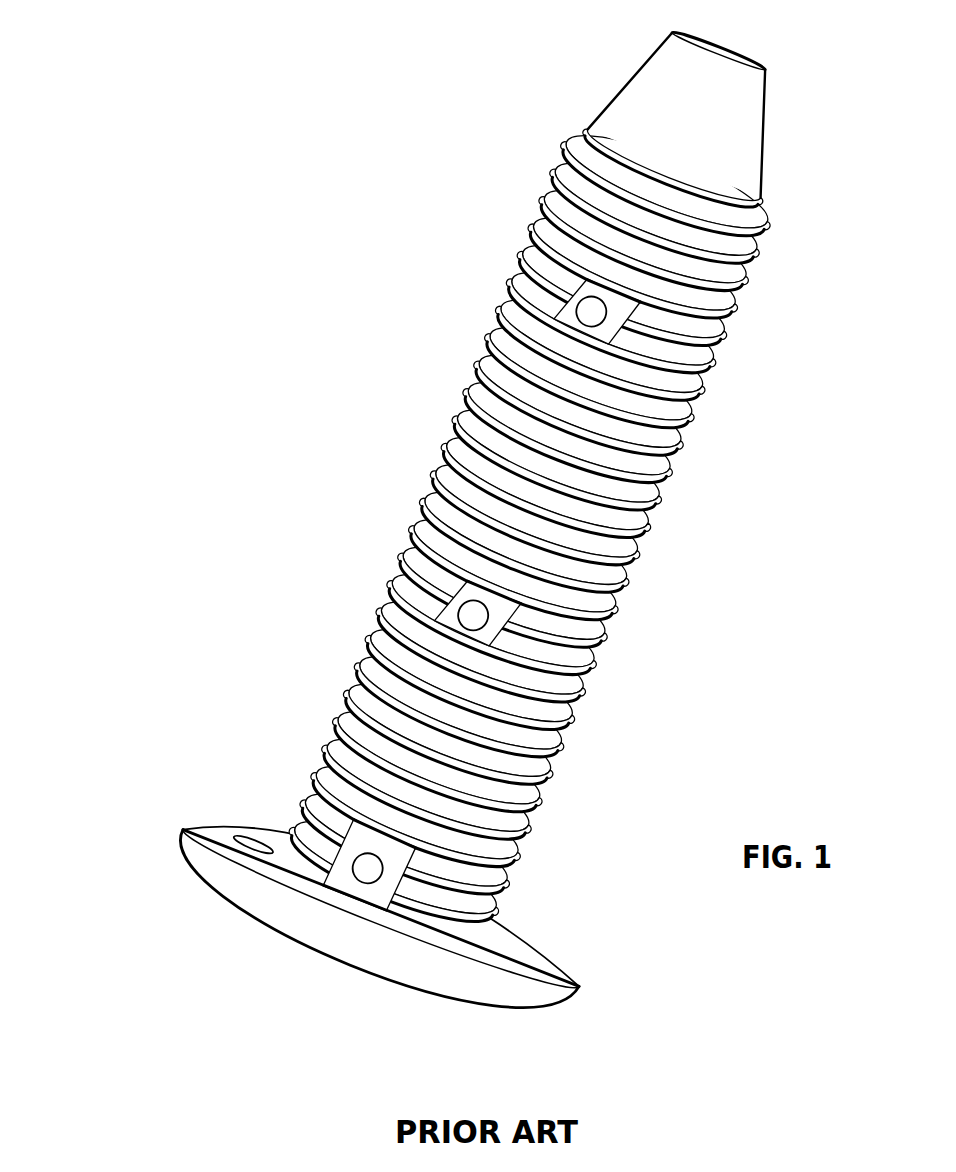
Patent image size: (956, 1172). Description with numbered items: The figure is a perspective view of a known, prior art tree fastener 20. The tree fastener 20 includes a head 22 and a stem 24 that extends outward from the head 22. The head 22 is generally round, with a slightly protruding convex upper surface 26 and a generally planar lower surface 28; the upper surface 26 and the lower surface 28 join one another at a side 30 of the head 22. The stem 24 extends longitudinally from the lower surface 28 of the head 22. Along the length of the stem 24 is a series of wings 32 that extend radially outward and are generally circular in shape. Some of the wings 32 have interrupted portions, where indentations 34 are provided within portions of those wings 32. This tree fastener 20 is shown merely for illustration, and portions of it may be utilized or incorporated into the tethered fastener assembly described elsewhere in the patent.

The tree fastener 20 is at (231, 259).
The head 22 is at (183, 837).
The stem 24 is at (527, 424).
The upper surface 26 is at (307, 942).
The lower surface 28 is at (533, 963).
The side 30 is at (203, 877).
The wings 32 is at (385, 647).
The indentations 34 is at (607, 333).